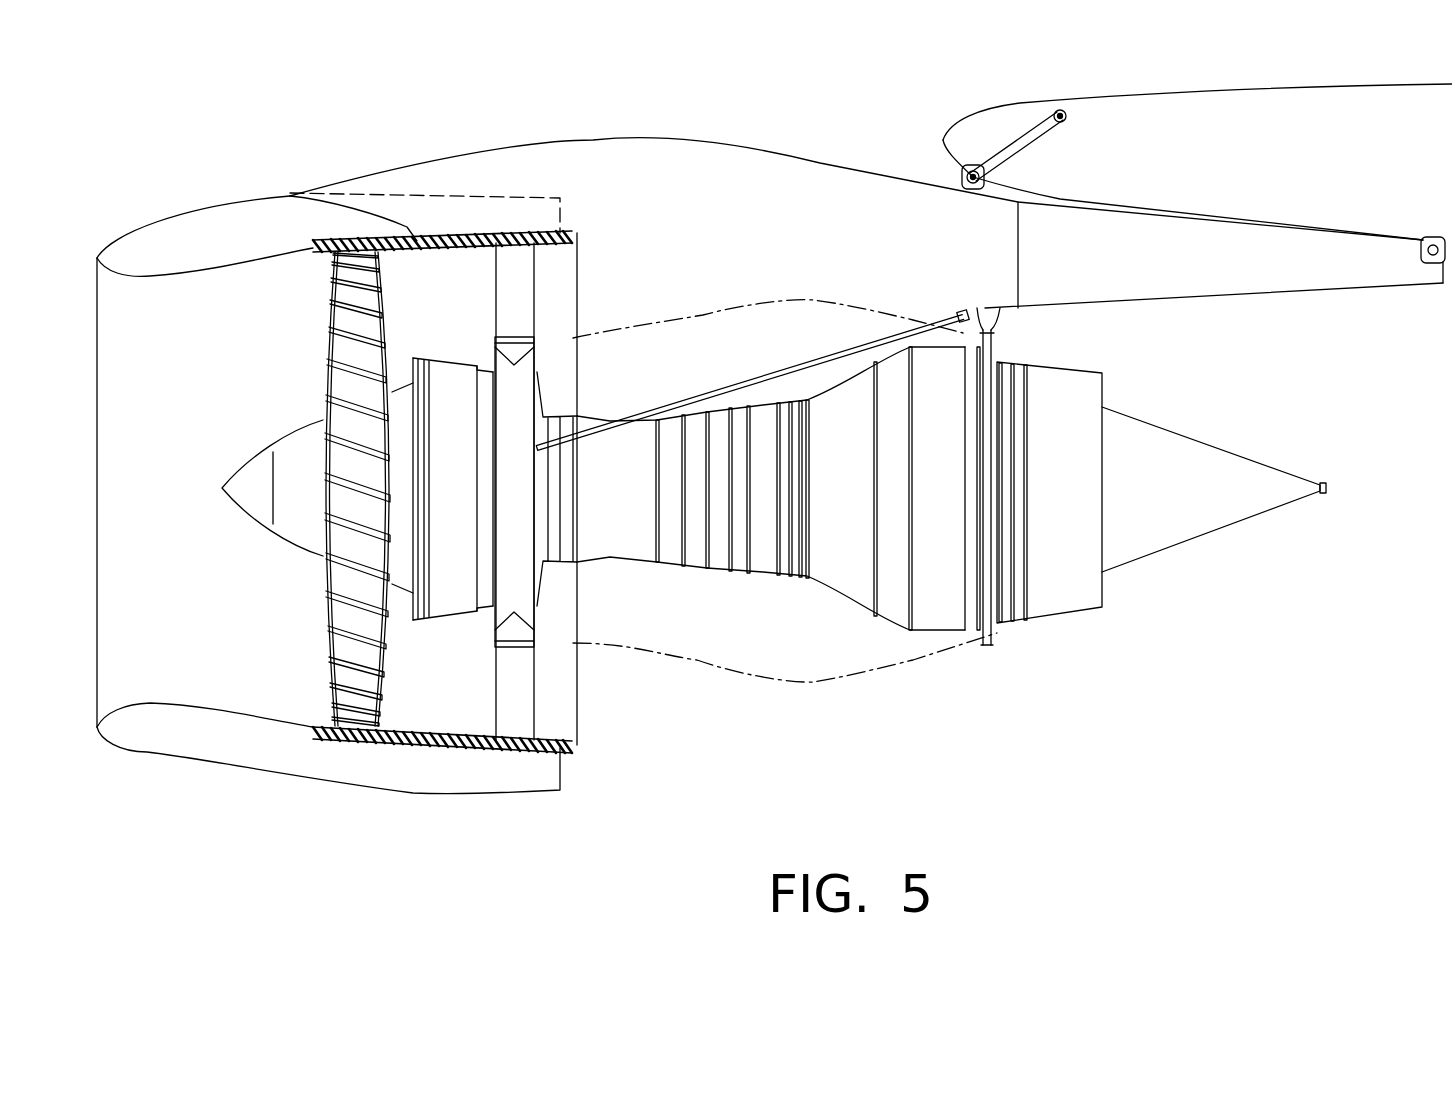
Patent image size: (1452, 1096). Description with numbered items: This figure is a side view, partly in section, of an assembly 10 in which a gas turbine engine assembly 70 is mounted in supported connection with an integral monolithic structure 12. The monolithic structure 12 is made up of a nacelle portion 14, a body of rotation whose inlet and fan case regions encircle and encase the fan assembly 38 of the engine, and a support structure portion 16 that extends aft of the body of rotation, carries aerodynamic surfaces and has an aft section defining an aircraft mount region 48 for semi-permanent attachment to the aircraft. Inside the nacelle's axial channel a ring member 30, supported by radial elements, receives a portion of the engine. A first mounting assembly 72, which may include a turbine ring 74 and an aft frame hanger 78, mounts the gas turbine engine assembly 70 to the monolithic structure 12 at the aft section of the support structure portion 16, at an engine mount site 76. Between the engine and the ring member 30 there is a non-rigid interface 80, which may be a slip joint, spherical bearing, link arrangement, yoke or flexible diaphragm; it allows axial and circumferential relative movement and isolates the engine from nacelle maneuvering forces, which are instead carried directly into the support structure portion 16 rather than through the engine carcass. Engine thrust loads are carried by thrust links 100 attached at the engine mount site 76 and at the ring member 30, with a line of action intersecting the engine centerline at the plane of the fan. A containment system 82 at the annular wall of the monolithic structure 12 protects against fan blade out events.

The assembly 10 is at (236, 66).
The monolithic structure 12 is at (187, 223).
The nacelle portion 14 is at (440, 778).
The support structure portion 16 is at (493, 157).
The ring member 30 is at (513, 340).
The fan assembly 38 is at (255, 377).
The aircraft mount region 48 is at (963, 203).
The gas turbine engine assembly 70 is at (939, 692).
The first mounting assembly 72 is at (1012, 334).
The turbine ring 74 is at (993, 637).
The engine mount site 76 is at (998, 294).
The aft frame hanger 78 is at (990, 330).
The non-rigid interface 80 is at (474, 336).
The containment system 82 is at (392, 742).
The thrust links 100 is at (750, 380).